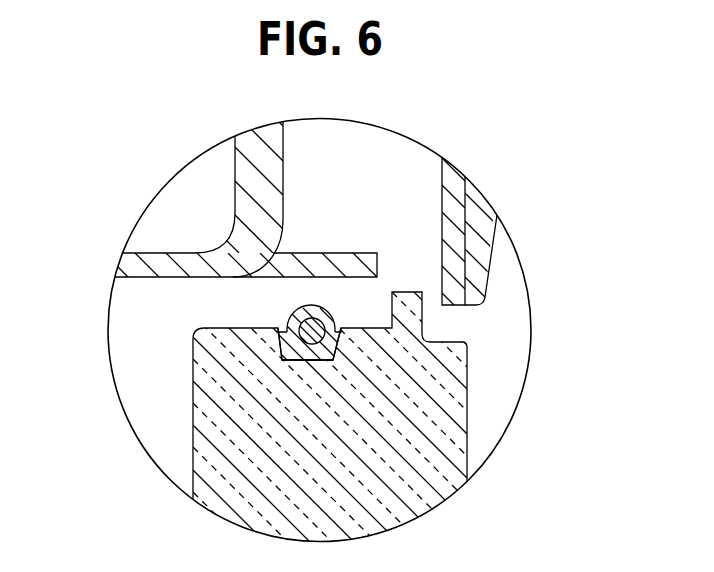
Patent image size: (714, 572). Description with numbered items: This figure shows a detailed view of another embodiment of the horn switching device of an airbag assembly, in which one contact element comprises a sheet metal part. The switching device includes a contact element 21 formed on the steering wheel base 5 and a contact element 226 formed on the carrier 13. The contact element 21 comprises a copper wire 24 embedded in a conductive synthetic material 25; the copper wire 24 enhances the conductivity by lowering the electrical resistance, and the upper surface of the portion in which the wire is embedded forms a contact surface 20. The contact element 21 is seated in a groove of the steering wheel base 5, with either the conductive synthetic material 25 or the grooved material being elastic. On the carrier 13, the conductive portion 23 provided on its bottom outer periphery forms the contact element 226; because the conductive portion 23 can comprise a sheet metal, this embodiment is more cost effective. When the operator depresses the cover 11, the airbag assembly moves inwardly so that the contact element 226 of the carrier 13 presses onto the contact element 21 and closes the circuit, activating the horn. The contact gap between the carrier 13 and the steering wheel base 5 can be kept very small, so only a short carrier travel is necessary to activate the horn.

The steering wheel base 5 is at (418, 368).
The cover 11 is at (470, 258).
The carrier 13 is at (250, 240).
The contact surface 20 is at (314, 308).
The contact element 21 is at (317, 357).
The conductive portion 23 is at (360, 262).
The copper wire 24 is at (288, 322).
The conductive synthetic material 25 is at (287, 345).
The contact element 226 is at (347, 252).